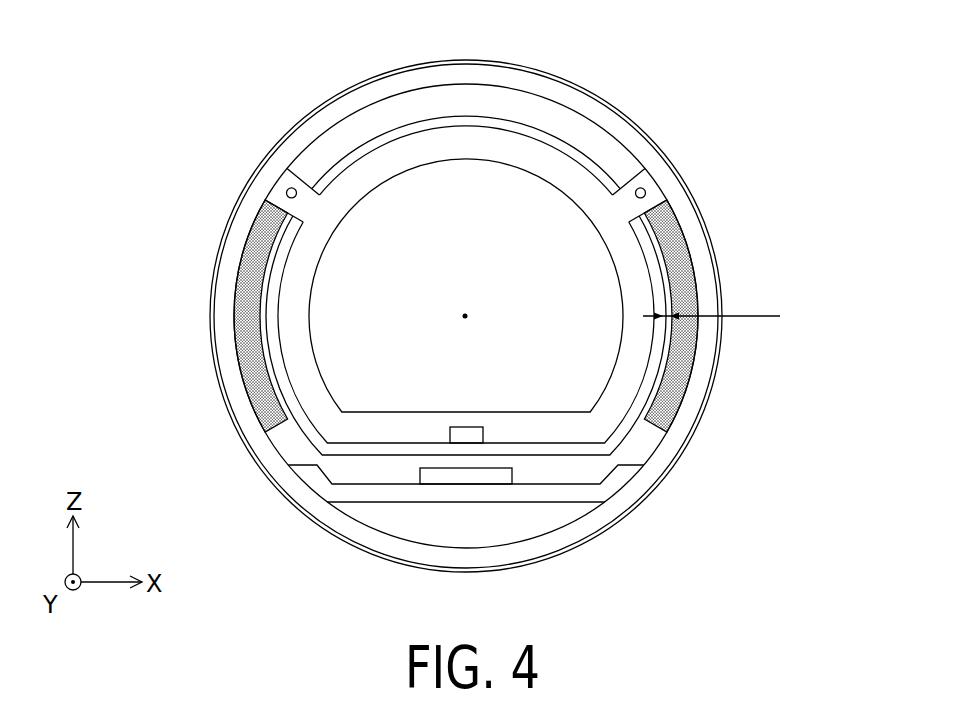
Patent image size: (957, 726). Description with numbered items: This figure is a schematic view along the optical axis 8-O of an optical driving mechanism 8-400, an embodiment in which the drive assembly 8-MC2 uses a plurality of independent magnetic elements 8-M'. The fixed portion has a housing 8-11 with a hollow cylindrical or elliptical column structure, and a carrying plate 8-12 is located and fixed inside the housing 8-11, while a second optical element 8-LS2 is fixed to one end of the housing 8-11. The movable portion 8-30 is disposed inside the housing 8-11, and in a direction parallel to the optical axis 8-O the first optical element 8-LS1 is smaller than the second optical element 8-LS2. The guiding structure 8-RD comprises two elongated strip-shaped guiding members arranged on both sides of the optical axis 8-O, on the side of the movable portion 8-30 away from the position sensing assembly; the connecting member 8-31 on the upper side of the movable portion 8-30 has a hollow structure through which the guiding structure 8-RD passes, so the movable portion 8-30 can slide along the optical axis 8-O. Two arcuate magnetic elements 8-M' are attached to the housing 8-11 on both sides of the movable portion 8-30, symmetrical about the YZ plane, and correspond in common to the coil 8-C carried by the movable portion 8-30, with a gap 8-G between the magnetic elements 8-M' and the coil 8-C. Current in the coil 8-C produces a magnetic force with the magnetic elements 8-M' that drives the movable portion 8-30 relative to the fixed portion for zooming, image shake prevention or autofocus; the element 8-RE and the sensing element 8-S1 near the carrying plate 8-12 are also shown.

The optical driving mechanism 8-400 is at (124, 50).
The housing 8-11 is at (570, 88).
The carrying plate 8-12 is at (565, 493).
The movable portion 8-30 is at (438, 205).
The connecting member 8-31 is at (283, 186).
The guiding structure 8-RD is at (286, 193).
The drive assembly 8-MC2 is at (481, 258).
The magnetic element 8-M' is at (389, 316).
The coil 8-C is at (285, 243).
The gap 8-G is at (711, 305).
The first optical element 8-LS1 is at (388, 340).
The second optical element 8-LS2 is at (641, 118).
The optical axis 8-O is at (493, 303).
The reference element 8-RE is at (466, 430).
The sensing element 8-S1 is at (465, 484).